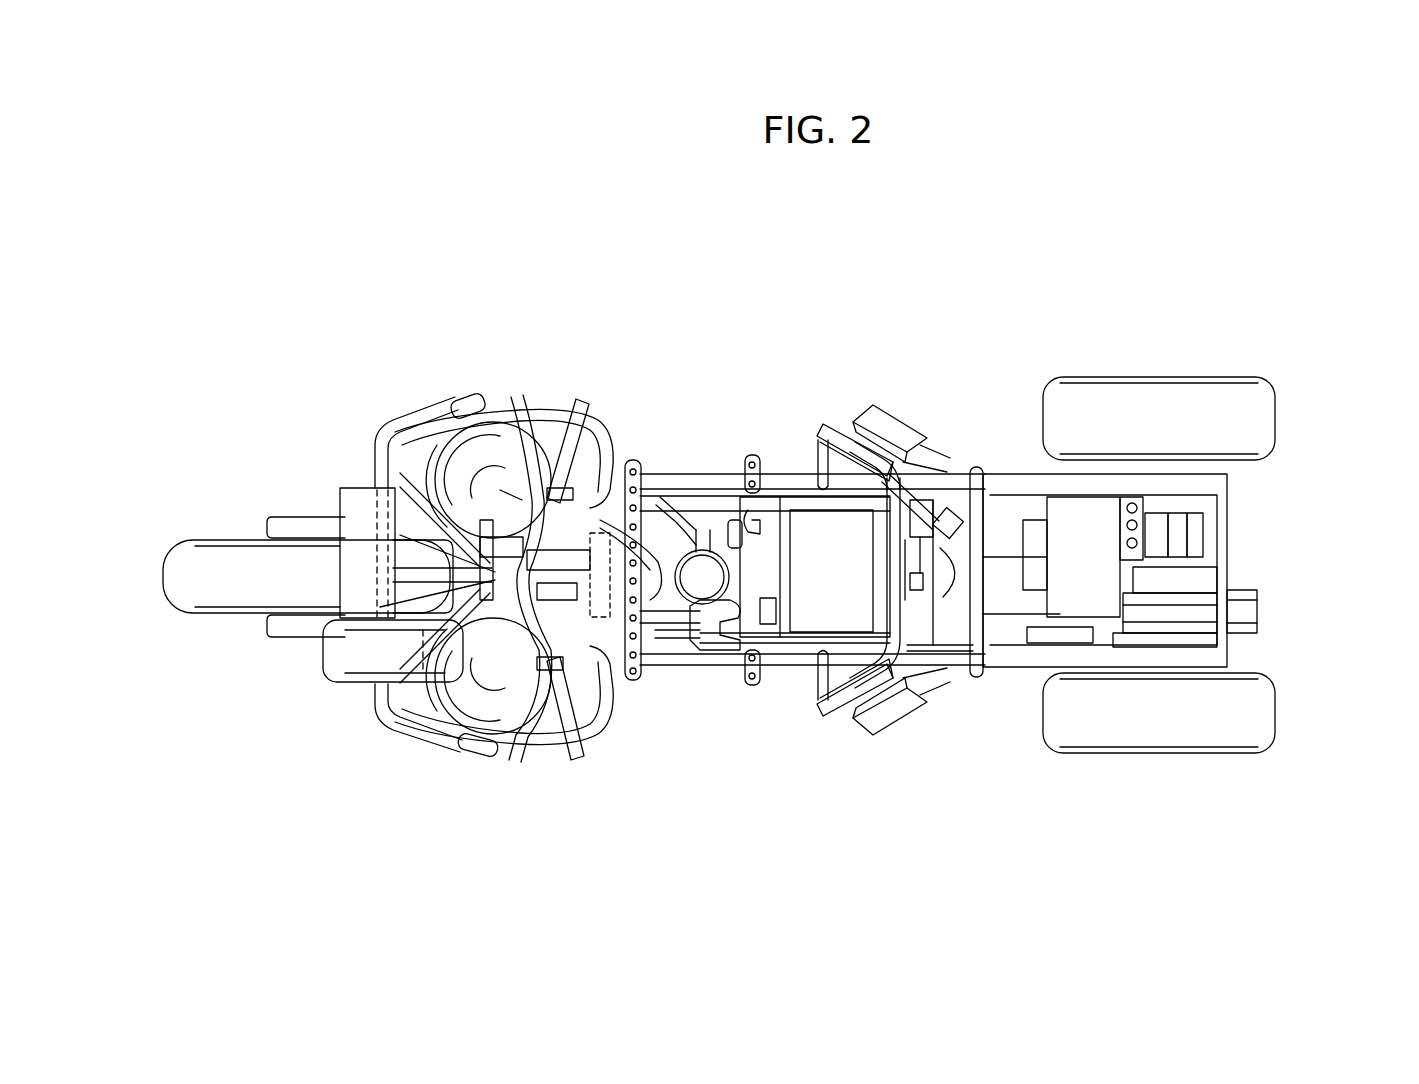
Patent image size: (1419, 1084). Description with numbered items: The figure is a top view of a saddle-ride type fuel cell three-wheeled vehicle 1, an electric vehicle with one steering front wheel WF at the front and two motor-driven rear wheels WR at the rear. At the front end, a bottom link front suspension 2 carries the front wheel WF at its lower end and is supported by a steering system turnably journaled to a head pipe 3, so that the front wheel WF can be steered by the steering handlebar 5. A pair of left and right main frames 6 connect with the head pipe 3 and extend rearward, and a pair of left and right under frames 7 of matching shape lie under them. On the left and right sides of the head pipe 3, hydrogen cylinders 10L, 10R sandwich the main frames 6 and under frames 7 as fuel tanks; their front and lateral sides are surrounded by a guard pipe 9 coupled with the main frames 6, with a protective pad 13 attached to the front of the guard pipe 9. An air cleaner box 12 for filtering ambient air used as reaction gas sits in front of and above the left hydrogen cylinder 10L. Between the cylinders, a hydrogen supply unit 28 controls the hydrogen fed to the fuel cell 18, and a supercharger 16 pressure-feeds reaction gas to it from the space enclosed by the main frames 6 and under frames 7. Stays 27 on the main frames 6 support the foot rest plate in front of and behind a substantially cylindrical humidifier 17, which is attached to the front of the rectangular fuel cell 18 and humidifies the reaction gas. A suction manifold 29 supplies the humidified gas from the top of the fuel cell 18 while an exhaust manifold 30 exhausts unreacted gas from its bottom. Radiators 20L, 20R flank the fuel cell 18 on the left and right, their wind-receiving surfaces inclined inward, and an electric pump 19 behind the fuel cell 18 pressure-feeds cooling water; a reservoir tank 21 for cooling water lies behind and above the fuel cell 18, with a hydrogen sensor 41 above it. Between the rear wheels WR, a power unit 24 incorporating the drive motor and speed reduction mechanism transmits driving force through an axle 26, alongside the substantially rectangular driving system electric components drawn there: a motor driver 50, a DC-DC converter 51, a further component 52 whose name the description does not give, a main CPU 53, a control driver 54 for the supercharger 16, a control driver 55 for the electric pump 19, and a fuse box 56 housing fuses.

The saddle-ride type fuel cell three-wheeled vehicle 1 is at (565, 262).
The bottom link front suspension 2 is at (290, 510).
The head pipe 3 is at (490, 600).
The steering handlebar 5 is at (598, 410).
The main frames 6 is at (693, 657).
The under frames 7 is at (670, 667).
The guard pipe 9 is at (388, 438).
The right hydrogen cylinder 10R is at (462, 447).
The left hydrogen cylinder 10L is at (460, 705).
The air cleaner box 12 is at (340, 650).
The protective pad 13 is at (362, 490).
The supercharger 16 is at (703, 548).
The humidifier 17 is at (700, 530).
The fuel cell 18 is at (807, 618).
The electric pump 19 is at (945, 600).
The right radiator 20R is at (819, 432).
The left radiator 20L is at (816, 712).
The reservoir tank 21 is at (1017, 474).
The power unit 24 is at (1268, 600).
The axle 26 is at (1180, 563).
The stays 27 is at (641, 475).
The hydrogen supply unit 28 is at (663, 623).
The suction manifold 29 is at (790, 497).
The exhaust manifold 30 is at (768, 647).
The hydrogen sensor 41 is at (955, 518).
The motor driver 50 is at (1055, 632).
The DC-DC converter 51 is at (1037, 530).
The component 52 is at (1097, 605).
The main CPU 53 is at (1133, 497).
The control driver 54 is at (1153, 523).
The control driver 55 is at (1177, 523).
The fuse box 56 is at (1193, 523).
The front wheel WF is at (175, 590).
The rear wheels WR is at (1270, 410).